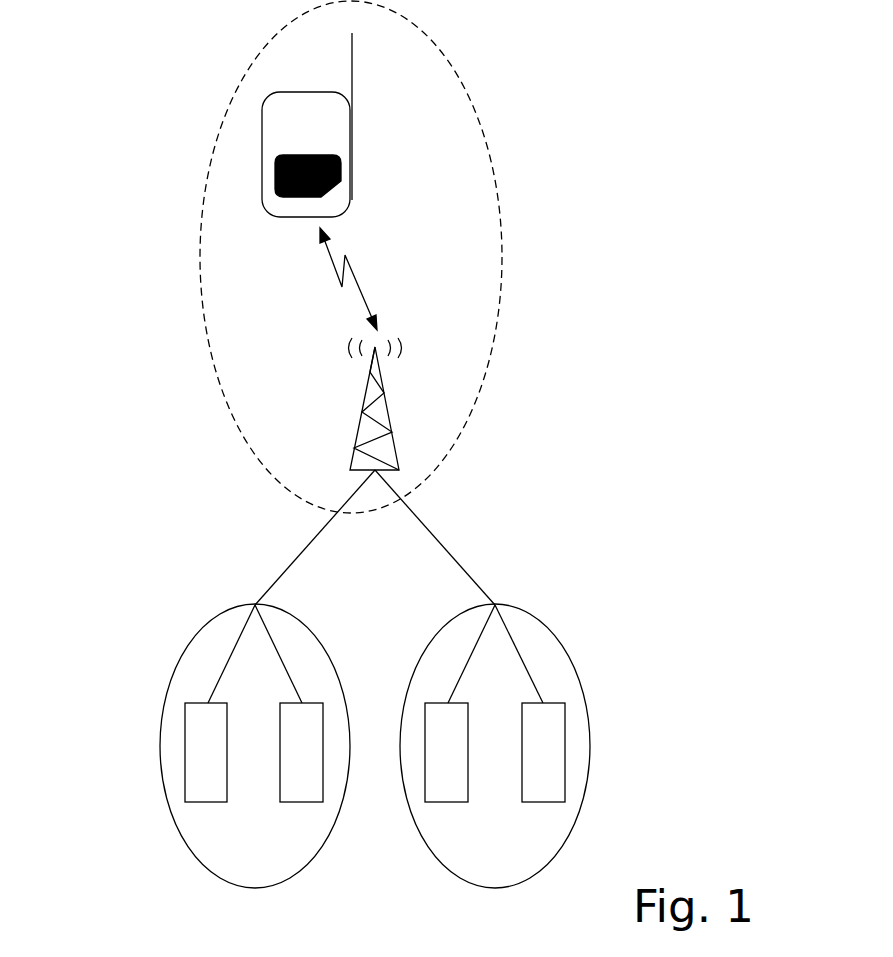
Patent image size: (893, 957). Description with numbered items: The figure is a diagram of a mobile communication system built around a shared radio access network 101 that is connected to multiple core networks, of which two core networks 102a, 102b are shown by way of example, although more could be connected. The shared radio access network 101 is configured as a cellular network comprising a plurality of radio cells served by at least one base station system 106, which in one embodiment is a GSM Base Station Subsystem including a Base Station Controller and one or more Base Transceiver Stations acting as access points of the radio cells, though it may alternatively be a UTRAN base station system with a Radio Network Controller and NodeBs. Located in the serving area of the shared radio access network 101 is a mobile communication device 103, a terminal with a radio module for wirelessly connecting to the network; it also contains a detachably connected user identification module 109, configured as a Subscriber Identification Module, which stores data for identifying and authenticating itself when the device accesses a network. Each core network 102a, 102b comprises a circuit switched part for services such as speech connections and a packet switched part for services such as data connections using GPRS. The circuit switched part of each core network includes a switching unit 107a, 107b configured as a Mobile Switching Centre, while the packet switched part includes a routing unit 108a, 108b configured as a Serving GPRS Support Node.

The shared radio access network 101 is at (473, 413).
The mobile communication device 103 is at (351, 184).
The user identification module 109 is at (276, 181).
The base station system 106 is at (362, 420).
The core network 102a is at (203, 627).
The core network 102b is at (547, 623).
The switching unit 107a is at (185, 757).
The routing unit 108a is at (297, 802).
The switching unit 107b is at (448, 802).
The routing unit 108b is at (565, 753).